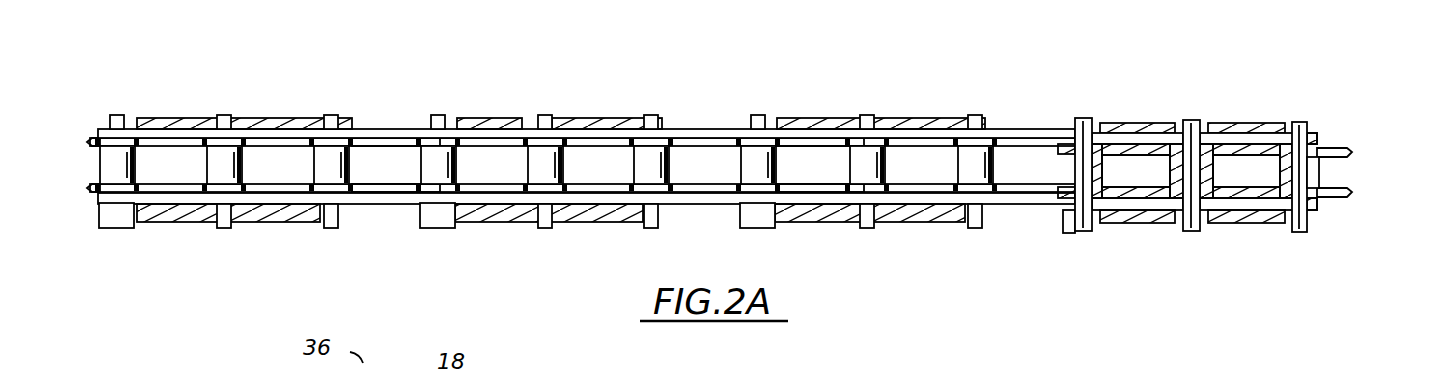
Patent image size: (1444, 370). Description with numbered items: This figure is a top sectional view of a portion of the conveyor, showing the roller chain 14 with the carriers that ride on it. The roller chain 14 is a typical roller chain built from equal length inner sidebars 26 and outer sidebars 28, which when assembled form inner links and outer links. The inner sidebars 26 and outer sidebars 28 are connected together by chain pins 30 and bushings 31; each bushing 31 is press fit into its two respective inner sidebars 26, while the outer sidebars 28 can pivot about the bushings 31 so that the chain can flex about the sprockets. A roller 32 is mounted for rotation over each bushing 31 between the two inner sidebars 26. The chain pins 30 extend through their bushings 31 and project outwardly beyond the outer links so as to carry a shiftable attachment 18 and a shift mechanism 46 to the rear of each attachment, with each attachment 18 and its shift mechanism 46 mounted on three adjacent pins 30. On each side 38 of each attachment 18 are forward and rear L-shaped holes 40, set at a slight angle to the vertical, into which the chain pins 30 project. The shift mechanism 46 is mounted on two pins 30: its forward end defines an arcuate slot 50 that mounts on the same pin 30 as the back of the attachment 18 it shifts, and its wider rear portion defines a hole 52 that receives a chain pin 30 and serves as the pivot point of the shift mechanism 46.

The roller chain 14 is at (100, 165).
The shiftable attachment 18 is at (272, 120).
The inner sidebar 26 is at (259, 147).
The outer sidebar 28 is at (392, 138).
The chain pin 30 is at (118, 113).
The bushing 31 is at (1327, 168).
The roller 32 is at (633, 167).
The side of attachment 38 is at (483, 120).
The L-shaped hole 40 is at (224, 115).
The shift mechanism 46 is at (112, 224).
The arcuate slot 50 is at (1190, 233).
The hole 52 is at (1082, 233).